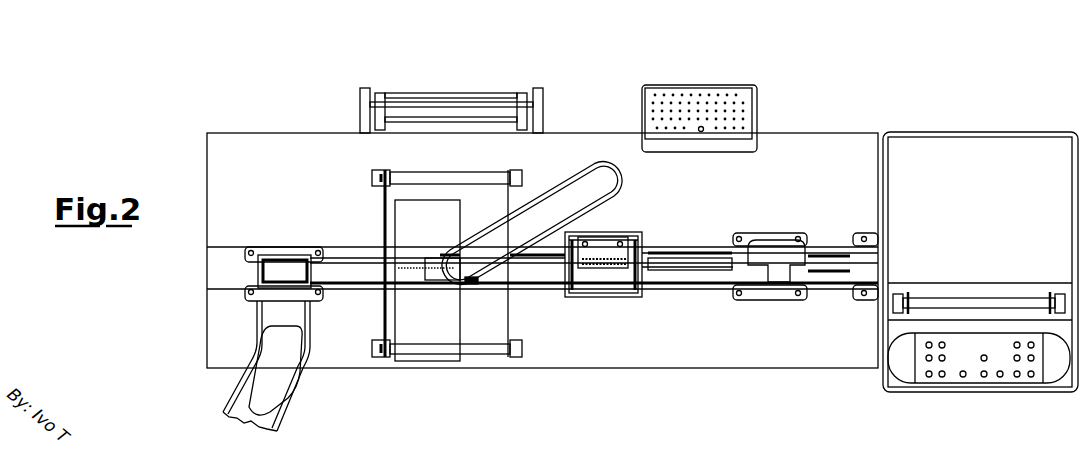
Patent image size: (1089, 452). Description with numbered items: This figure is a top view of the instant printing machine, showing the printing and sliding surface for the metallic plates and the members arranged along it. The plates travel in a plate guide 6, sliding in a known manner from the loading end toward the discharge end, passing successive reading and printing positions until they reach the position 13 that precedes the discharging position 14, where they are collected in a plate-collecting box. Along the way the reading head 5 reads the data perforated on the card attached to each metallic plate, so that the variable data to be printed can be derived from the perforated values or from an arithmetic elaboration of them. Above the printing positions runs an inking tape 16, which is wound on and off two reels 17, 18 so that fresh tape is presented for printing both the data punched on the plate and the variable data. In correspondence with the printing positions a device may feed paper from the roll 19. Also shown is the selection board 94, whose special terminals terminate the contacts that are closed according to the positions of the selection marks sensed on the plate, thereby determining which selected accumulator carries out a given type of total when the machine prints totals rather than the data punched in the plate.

The reading head 5 is at (607, 244).
The plate guide 6 is at (706, 268).
The position preceding the discharging position 13 is at (348, 270).
The discharging position 14 is at (285, 268).
The inking tape 16 is at (500, 200).
The reel 17 is at (483, 351).
The reel 18 is at (479, 177).
The roll 19 is at (481, 103).
The selection board 94 is at (648, 96).